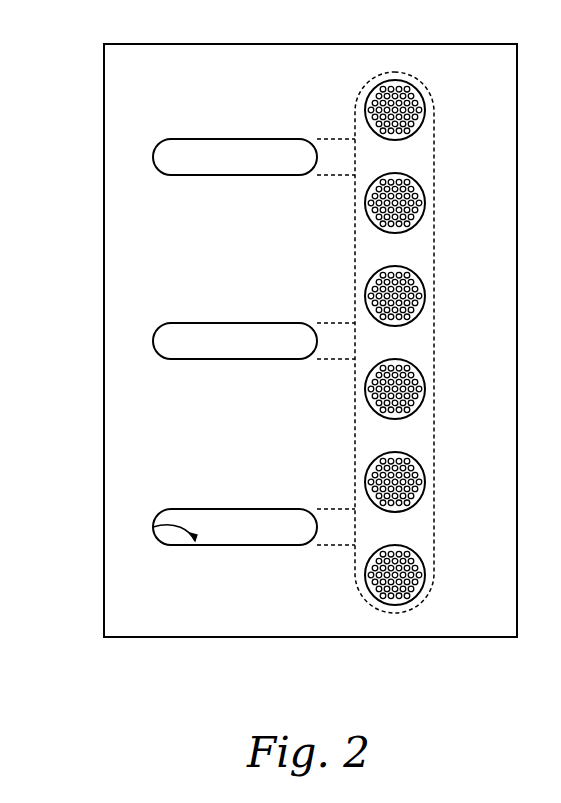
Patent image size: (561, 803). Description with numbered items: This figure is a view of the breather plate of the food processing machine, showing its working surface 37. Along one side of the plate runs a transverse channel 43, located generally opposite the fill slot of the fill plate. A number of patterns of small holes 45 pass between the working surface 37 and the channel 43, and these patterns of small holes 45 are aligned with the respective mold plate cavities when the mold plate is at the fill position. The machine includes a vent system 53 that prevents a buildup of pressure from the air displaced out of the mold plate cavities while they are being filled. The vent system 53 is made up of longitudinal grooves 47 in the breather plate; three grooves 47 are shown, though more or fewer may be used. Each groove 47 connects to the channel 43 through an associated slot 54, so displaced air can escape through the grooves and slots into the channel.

The working surface 37 is at (176, 255).
The transverse channel 43 is at (421, 543).
The patterns of small holes 45 is at (357, 580).
The longitudinal grooves 47 is at (183, 326).
The vent system 53 is at (153, 527).
The slots 54 is at (332, 327).